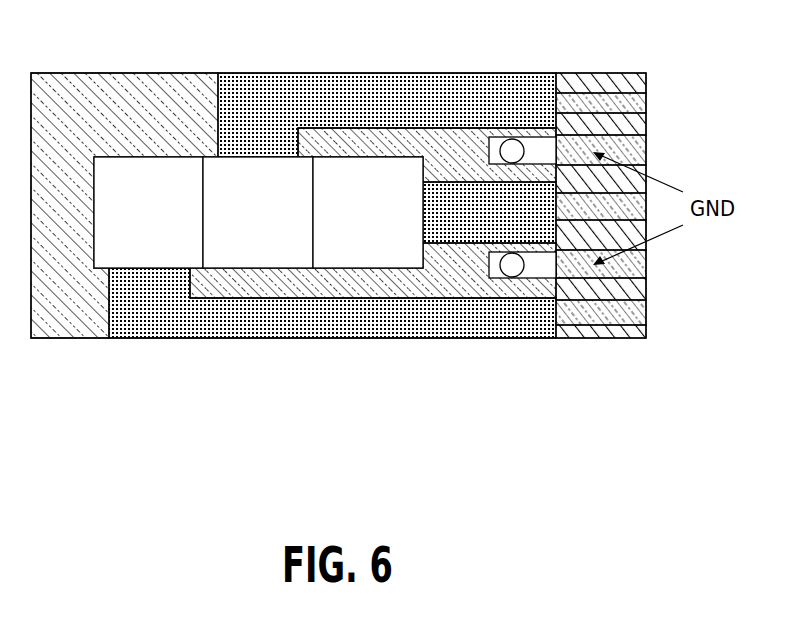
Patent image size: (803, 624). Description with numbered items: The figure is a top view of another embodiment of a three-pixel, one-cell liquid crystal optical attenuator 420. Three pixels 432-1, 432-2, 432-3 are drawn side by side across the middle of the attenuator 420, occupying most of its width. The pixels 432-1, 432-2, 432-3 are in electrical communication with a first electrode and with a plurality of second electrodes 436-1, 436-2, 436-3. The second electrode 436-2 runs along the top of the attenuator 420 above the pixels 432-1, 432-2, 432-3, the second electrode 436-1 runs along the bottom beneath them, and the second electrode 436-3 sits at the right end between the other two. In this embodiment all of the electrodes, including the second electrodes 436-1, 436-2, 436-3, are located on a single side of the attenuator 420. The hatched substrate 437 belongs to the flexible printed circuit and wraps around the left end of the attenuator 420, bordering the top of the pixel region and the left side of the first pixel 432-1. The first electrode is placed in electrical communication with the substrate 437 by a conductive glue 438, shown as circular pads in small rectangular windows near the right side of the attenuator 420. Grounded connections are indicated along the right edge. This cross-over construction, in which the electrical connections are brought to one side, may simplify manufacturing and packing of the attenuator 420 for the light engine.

The one-cell liquid crystal attenuator 420 is at (681, 53).
The substrate 437 is at (160, 90).
The second electrode 436-1 is at (154, 317).
The second electrode 436-2 is at (410, 88).
The second electrode 436-3 is at (537, 195).
The pixel 432-1 is at (180, 224).
The pixel 432-2 is at (289, 224).
The pixel 432-3 is at (399, 224).
The conductive glue 438 is at (511, 274).